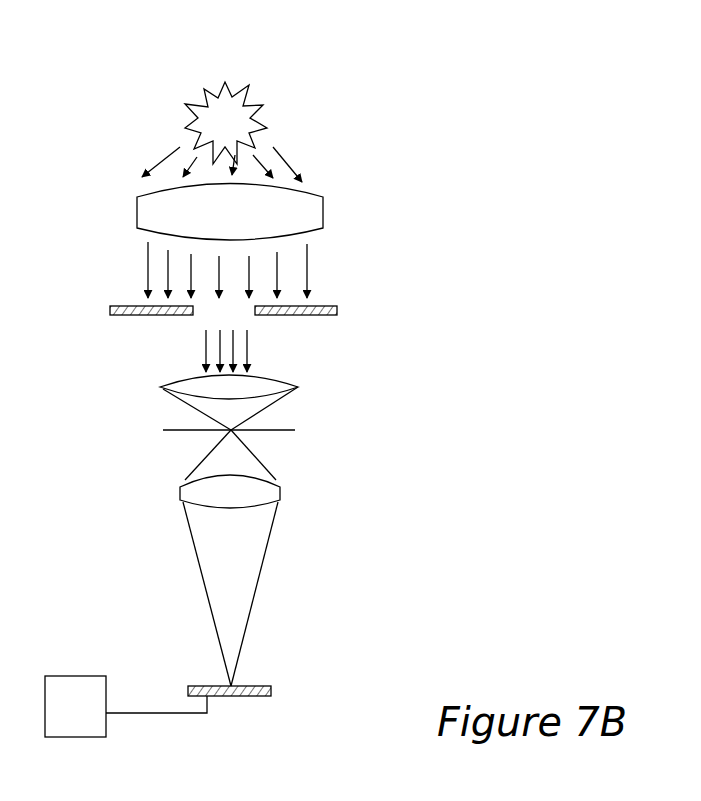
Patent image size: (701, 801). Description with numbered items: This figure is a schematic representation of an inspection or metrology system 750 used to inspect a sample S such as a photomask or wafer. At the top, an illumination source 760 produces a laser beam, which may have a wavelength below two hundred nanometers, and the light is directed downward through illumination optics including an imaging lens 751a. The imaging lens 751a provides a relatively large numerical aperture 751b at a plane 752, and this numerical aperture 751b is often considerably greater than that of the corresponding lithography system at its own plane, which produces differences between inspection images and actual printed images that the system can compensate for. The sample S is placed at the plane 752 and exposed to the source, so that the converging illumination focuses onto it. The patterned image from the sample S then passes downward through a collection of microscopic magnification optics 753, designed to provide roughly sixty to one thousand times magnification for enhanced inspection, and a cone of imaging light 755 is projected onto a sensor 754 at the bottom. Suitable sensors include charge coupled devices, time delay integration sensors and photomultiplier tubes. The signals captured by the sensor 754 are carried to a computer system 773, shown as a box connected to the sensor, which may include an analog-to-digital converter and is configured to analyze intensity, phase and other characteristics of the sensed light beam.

The inspection system 750 is at (348, 120).
The illumination source 760 is at (254, 94).
The imaging lens 751a is at (88, 171).
The numerical aperture 751b is at (262, 408).
The plane 752 is at (153, 430).
The sample S is at (277, 430).
The magnification optics 753 is at (132, 437).
The imaging light cone 755 is at (228, 578).
The sensor 754 is at (252, 682).
The computer system 773 is at (94, 719).